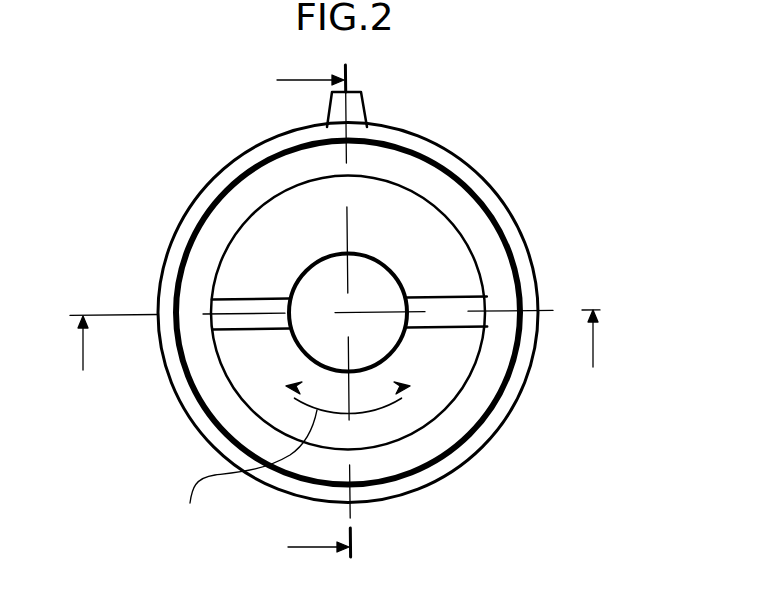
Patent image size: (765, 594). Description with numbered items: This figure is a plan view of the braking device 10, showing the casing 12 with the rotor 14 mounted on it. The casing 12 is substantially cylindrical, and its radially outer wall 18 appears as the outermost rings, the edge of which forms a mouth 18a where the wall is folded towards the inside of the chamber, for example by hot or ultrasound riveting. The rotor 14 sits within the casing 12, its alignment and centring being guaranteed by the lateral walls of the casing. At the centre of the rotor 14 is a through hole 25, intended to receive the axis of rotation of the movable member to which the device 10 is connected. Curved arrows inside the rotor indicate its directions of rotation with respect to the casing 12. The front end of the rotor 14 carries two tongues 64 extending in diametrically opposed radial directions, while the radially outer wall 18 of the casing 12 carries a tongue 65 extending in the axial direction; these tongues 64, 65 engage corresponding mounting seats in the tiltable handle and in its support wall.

The braking device 10 is at (532, 153).
The casing 12 is at (490, 440).
The rotor 14 is at (438, 203).
The radially outer wall 18 is at (538, 283).
The mouth 18a is at (487, 242).
The through hole 25 is at (391, 275).
The tongues 64 is at (253, 296).
The tongue 65 is at (367, 96).